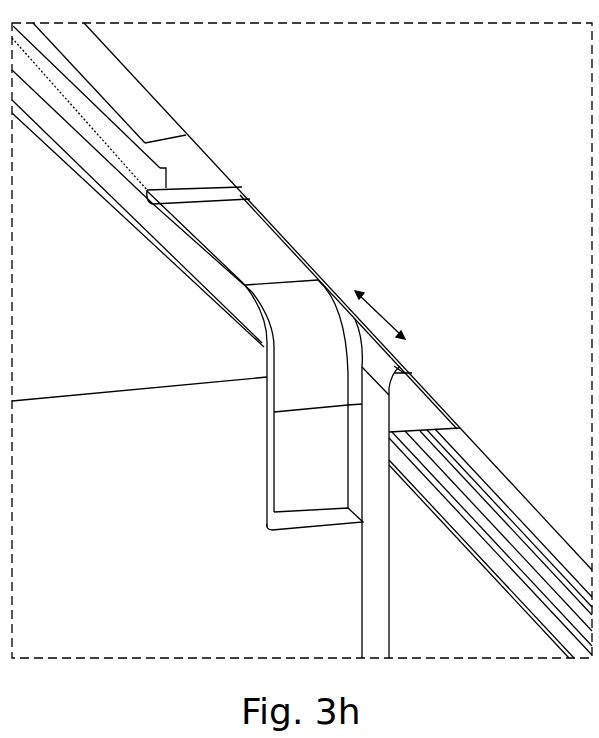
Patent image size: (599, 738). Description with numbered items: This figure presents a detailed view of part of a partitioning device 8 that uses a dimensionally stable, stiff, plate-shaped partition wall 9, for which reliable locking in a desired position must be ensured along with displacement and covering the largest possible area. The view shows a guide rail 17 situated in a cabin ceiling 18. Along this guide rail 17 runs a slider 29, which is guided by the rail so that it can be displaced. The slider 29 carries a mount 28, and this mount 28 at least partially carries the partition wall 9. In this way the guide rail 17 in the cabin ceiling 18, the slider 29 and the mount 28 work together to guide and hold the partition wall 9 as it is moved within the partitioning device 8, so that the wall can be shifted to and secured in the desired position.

The guide rail 17 is at (141, 92).
The slider 29 is at (200, 165).
The mount 28 is at (250, 247).
The cabin ceiling 18 is at (538, 246).
The partition wall 9 is at (175, 568).
The partitioning device 8 is at (437, 604).